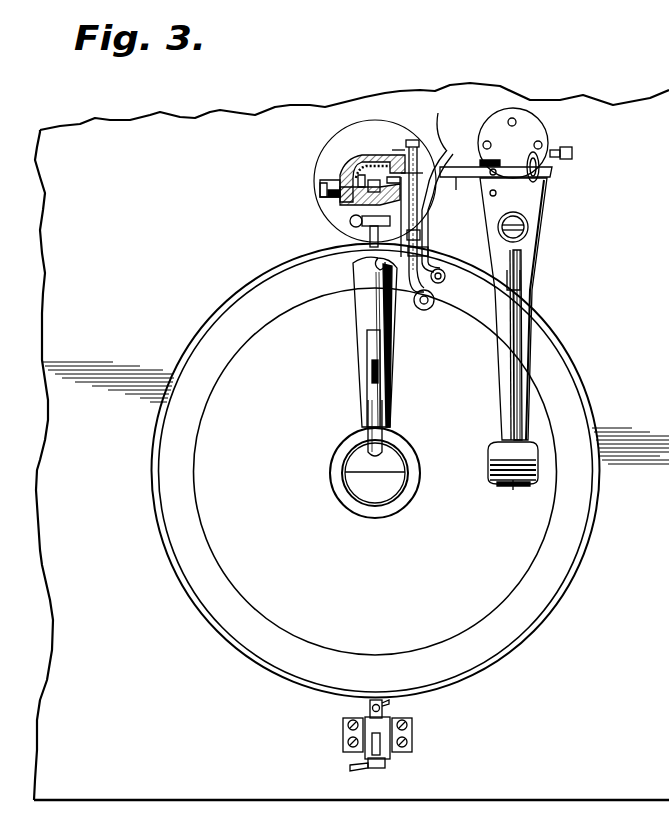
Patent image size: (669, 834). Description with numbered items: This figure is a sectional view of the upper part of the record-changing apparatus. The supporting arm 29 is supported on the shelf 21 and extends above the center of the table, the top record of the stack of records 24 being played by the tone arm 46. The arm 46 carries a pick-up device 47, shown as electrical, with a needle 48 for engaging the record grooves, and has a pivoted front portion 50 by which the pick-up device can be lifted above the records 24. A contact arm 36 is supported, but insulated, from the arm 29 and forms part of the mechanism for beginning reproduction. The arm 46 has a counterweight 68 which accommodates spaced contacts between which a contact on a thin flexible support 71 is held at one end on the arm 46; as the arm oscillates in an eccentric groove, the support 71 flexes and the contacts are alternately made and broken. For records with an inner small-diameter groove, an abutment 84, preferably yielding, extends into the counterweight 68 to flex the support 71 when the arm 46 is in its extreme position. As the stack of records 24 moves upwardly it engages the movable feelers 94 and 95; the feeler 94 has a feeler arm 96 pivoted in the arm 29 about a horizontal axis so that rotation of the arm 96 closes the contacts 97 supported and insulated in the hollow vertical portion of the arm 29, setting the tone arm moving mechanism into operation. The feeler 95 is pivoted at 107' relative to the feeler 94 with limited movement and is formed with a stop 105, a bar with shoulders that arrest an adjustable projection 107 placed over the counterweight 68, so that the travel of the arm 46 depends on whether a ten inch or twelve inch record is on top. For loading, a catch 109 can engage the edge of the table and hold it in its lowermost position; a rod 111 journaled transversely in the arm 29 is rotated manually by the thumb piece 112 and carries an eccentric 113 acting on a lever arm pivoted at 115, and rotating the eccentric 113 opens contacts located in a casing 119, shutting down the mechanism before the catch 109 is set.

The shelf 21 is at (77, 470).
The stack of records 24 is at (376, 471).
The supporting arm 29 is at (352, 170).
The contact arm 36 is at (385, 418).
The arm 46 is at (533, 260).
The pick-up device 47 is at (537, 460).
The needle 48 is at (513, 488).
The pivoted front portion 50 is at (522, 332).
The counterweight 68 is at (533, 131).
The flexible support 71 is at (448, 188).
The abutment 84 is at (557, 167).
The feeler 94 is at (424, 310).
The feeler 95 is at (445, 285).
The feeler arm 96 is at (412, 216).
The contacts 97 is at (398, 150).
The stop 105 is at (437, 123).
The adjustable projection 107 is at (496, 191).
The pivot 107' is at (442, 245).
The catch 109 is at (370, 238).
The rod 111 is at (350, 168).
The thumb piece 112 is at (320, 193).
The eccentric 113 is at (340, 207).
The pivot 115 is at (363, 218).
The casing 119 is at (338, 178).